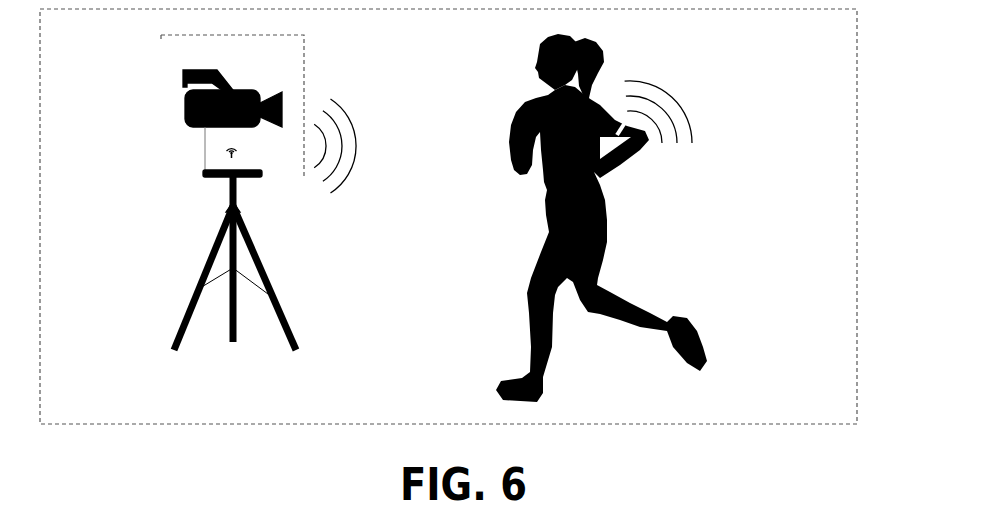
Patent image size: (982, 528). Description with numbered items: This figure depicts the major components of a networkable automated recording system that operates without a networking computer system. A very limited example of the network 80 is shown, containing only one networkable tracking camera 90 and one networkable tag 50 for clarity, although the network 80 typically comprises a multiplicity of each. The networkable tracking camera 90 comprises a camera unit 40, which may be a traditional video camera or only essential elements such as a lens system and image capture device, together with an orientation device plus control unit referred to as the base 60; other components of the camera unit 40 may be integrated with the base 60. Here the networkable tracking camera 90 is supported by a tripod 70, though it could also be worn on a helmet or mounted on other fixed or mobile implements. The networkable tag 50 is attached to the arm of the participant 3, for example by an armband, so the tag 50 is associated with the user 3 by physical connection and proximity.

The participant 3 is at (547, 207).
The camera unit 40 is at (185, 107).
The networkable tag 50 is at (631, 137).
The base 60 is at (222, 156).
The tripod 70 is at (190, 302).
The network 80 is at (857, 63).
The networkable tracking camera 90 is at (304, 60).